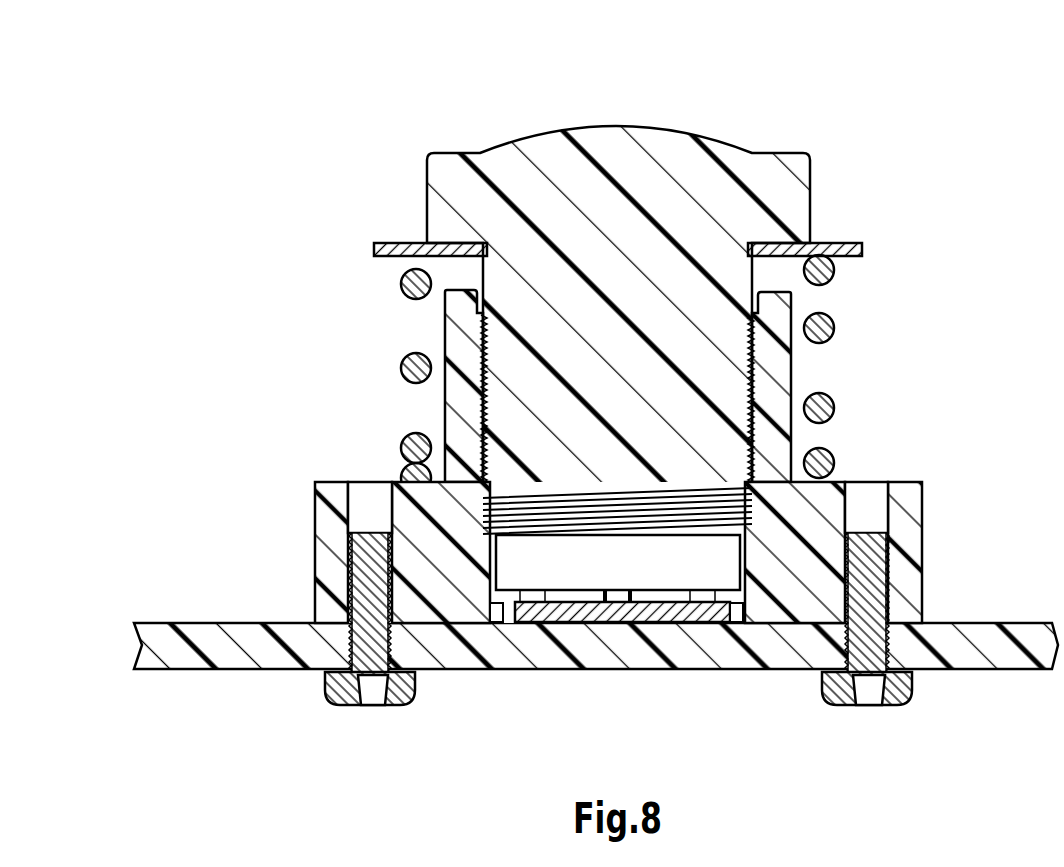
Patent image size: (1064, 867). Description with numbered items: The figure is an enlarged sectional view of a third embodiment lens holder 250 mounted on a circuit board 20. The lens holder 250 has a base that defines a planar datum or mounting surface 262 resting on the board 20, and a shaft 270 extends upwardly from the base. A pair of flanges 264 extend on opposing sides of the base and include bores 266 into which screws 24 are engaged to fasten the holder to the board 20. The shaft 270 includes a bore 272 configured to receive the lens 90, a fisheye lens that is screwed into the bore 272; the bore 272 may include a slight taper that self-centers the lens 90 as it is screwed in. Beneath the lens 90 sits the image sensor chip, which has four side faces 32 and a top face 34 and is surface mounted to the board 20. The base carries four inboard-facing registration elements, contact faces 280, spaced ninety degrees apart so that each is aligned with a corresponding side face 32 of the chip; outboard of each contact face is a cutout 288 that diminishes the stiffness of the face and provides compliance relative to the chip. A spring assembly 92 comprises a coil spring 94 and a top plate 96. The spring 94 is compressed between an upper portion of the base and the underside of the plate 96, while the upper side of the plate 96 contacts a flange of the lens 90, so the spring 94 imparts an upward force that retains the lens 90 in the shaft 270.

The board 20 is at (195, 623).
The screws 24 is at (340, 690).
The side faces 32 is at (660, 613).
The top face 34 is at (600, 615).
The lens 90 is at (552, 157).
The spring assembly 92 is at (538, 359).
The coil spring 94 is at (403, 288).
The top plate 96 is at (406, 243).
The lens holder 250 is at (679, 583).
The mounting surface 262 is at (432, 668).
The flanges 264 is at (905, 560).
The bores 266 is at (892, 468).
The shaft 270 is at (462, 330).
The bore 272 is at (780, 365).
The contact faces 280 is at (507, 624).
The cutout 288 is at (497, 615).